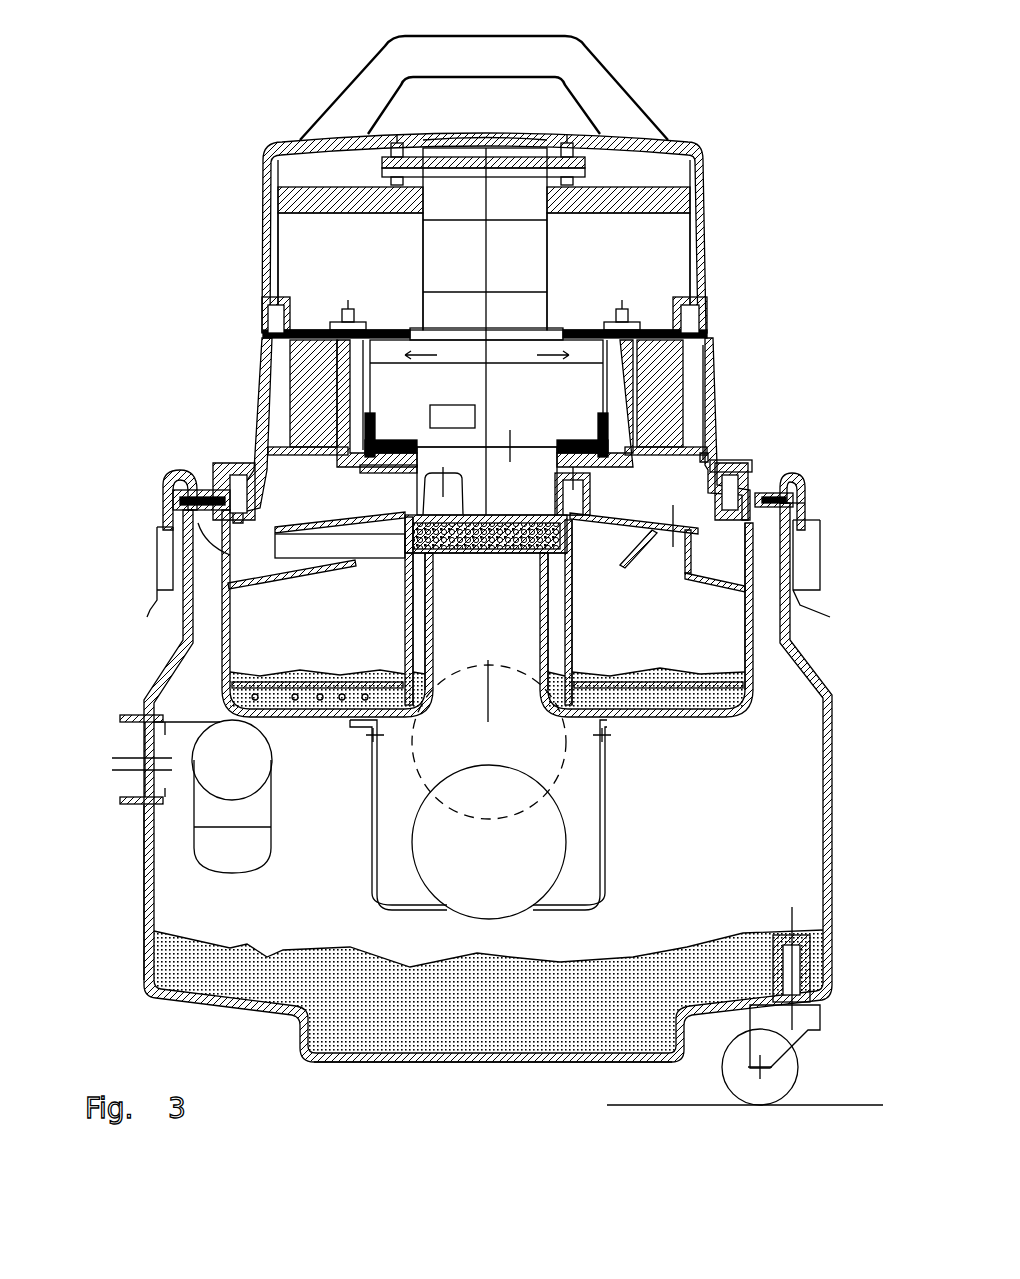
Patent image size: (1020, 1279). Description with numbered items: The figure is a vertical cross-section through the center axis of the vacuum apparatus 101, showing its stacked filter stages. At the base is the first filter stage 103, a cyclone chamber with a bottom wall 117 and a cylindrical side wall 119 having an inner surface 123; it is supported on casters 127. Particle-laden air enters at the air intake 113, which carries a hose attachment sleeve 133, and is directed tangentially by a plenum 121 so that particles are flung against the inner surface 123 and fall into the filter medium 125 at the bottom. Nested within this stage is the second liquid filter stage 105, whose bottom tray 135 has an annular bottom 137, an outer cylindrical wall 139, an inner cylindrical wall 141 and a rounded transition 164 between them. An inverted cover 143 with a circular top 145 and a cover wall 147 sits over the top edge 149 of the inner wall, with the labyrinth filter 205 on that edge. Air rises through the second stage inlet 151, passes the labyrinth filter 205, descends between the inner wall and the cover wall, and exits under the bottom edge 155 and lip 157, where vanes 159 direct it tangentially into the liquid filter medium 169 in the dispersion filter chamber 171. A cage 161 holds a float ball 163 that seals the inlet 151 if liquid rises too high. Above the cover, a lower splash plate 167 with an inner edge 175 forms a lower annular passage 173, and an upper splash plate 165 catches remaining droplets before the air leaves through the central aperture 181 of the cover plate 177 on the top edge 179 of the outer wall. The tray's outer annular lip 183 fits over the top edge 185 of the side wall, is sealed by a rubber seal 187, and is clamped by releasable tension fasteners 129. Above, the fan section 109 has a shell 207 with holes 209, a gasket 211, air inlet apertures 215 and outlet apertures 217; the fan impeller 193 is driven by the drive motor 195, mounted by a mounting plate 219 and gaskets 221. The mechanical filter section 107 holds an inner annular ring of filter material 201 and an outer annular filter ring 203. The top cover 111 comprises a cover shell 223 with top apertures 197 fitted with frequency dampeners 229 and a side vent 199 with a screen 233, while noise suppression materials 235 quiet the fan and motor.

The vacuum apparatus 101 is at (803, 117).
The first filter stage 103 is at (812, 772).
The second liquid filter stage 105 is at (182, 640).
The mechanical filter section 107 is at (700, 386).
The fan section 109 is at (690, 243).
The top cover 111 is at (670, 140).
The air intake 113 is at (143, 756).
The bottom wall 117 is at (588, 1066).
The cylindrical side wall 119 is at (833, 872).
The plenum 121 is at (205, 793).
The inner surface 123 is at (158, 883).
The filter medium 125 is at (265, 992).
The casters 127 is at (805, 1027).
The releasable tension fasteners 129 is at (822, 548).
The hose attachment sleeve 133 is at (130, 804).
The bottom tray 135 is at (298, 718).
The annular bottom 137 is at (637, 720).
The outer cylindrical wall 139 is at (752, 672).
The inner cylindrical wall 141 is at (434, 590).
The inverted cover 143 is at (402, 580).
The circular top 145 is at (405, 536).
The cover wall 147 is at (566, 546).
The top edge 149 is at (450, 552).
The second stage inlet 151 is at (466, 700).
The bottom edge 155 is at (575, 655).
The lip 157 is at (632, 690).
The vanes 159 is at (290, 672).
The cage 161 is at (602, 836).
The float ball 163 is at (538, 764).
The transition 164 is at (730, 700).
The upper splash plate 165 is at (335, 520).
The lower splash plate 167 is at (312, 578).
The liquid filter medium 169 is at (240, 700).
The dispersion filter chamber 171 is at (437, 640).
The lower annular passage 173 is at (380, 562).
The inner edge 175 is at (612, 572).
The cover plate 177 is at (790, 488).
The top edge 179 is at (205, 498).
The central aperture 181 is at (510, 460).
The outer annular lip 183 is at (795, 502).
The top edge 185 is at (232, 556).
The rubber seal 187 is at (195, 512).
The fan impeller 193 is at (452, 416).
The drive motor 195 is at (527, 244).
The top apertures 197 is at (490, 132).
The side vent 199 is at (292, 246).
The inner annular ring of filter material 201 is at (335, 385).
The outer annular filter ring 203 is at (295, 388).
The labyrinth filter 205 is at (596, 474).
The shell 207 is at (718, 432).
The holes 209 is at (742, 483).
The gasket 211 is at (400, 470).
The air inlet apertures 215 is at (368, 396).
The outlet apertures 217 is at (722, 476).
The mounting plate 219 is at (380, 320).
The gaskets 221 is at (580, 320).
The cover shell 223 is at (700, 203).
The frequency dampeners 229 is at (457, 172).
The screen 233 is at (268, 274).
The noise suppression materials 235 is at (702, 166).